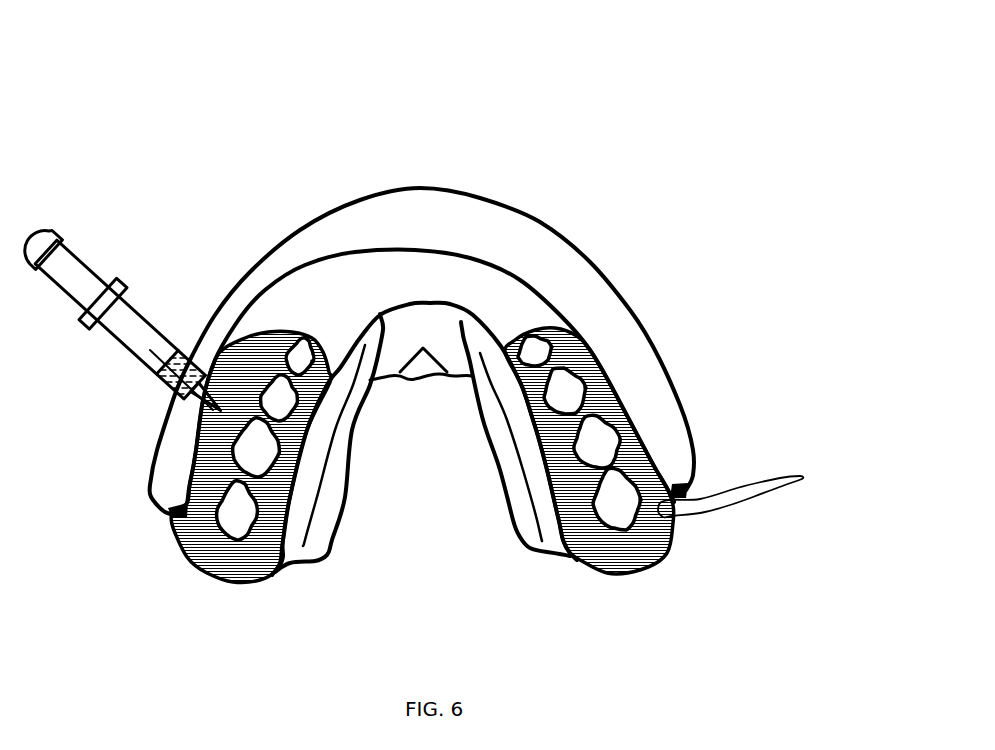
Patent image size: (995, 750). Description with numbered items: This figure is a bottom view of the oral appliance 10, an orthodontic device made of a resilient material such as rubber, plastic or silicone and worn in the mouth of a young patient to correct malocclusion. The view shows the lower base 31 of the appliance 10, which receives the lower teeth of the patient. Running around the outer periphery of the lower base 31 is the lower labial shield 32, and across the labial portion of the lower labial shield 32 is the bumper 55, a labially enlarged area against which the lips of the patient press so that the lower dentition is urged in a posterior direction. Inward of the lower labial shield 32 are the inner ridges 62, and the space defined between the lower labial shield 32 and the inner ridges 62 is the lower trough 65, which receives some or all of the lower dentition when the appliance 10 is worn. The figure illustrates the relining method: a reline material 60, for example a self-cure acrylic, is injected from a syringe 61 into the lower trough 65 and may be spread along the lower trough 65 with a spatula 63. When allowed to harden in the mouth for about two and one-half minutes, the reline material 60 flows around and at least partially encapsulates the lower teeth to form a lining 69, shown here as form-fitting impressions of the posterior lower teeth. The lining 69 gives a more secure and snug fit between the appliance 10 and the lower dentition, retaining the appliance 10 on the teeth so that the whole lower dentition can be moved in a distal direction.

The appliance 10 is at (641, 99).
The lower base 31 is at (357, 292).
The lower labial shield 32 is at (151, 463).
The bumper 55 is at (300, 227).
The reline material 60 is at (170, 366).
The syringe 61 is at (90, 258).
The inner ridges 62 is at (492, 450).
The spatula 63 is at (738, 503).
The lower trough 65 is at (447, 282).
The lining 69 is at (222, 557).